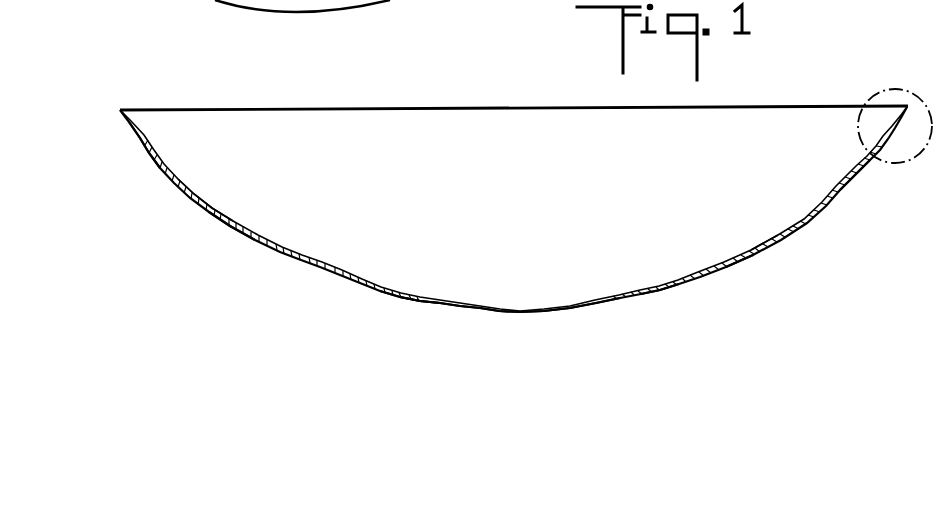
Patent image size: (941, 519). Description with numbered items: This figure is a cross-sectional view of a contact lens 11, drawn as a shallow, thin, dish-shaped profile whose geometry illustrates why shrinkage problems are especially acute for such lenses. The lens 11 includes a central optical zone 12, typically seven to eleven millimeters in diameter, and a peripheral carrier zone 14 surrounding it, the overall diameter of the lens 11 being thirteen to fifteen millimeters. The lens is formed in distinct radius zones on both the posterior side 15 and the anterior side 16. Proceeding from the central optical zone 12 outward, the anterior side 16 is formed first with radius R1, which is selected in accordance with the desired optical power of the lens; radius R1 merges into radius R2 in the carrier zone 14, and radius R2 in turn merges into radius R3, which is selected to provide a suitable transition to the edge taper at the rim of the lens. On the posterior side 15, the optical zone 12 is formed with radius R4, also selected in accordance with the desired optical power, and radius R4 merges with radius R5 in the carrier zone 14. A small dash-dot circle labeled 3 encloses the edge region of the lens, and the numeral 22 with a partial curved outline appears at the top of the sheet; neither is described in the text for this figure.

The contact lens 11 is at (838, 229).
The central optical zone 12 is at (658, 299).
The peripheral carrier zone 14 is at (852, 183).
The posterior side 15 is at (737, 262).
The anterior side 16 is at (757, 258).
The detail area of FIG. 3 is at (897, 88).
The element of adjacent figure 22 is at (261, 13).
The radius R1 is at (434, 316).
The radius R2 is at (223, 234).
The radius R3 is at (140, 163).
The radius R4 is at (416, 286).
The radius R5 is at (217, 186).